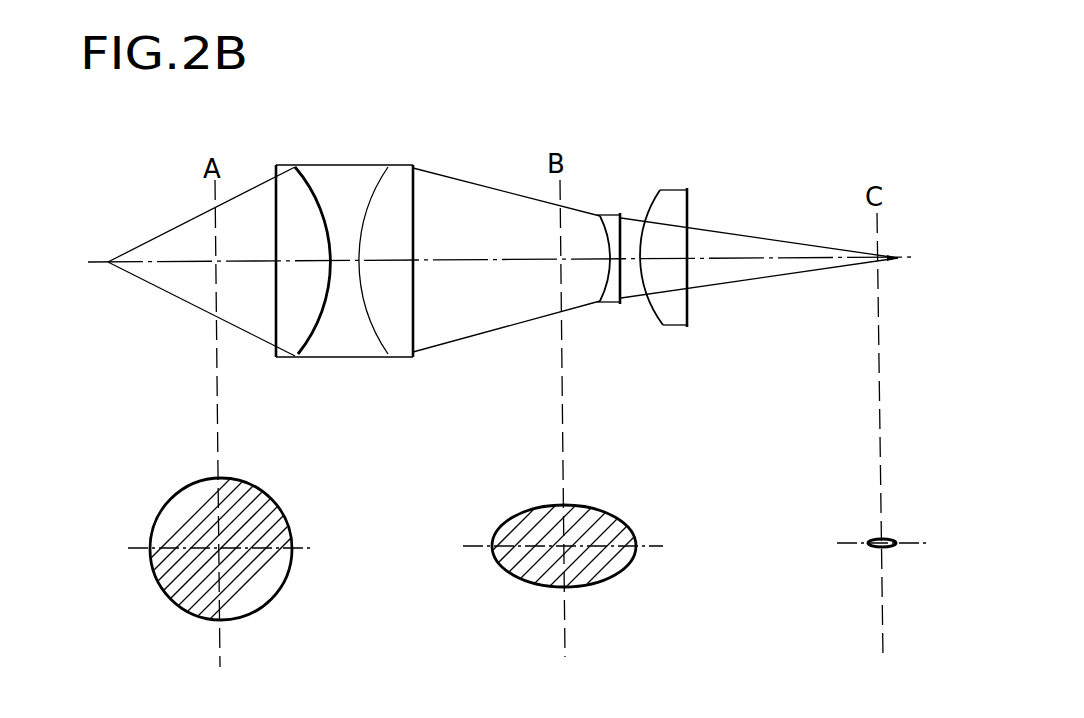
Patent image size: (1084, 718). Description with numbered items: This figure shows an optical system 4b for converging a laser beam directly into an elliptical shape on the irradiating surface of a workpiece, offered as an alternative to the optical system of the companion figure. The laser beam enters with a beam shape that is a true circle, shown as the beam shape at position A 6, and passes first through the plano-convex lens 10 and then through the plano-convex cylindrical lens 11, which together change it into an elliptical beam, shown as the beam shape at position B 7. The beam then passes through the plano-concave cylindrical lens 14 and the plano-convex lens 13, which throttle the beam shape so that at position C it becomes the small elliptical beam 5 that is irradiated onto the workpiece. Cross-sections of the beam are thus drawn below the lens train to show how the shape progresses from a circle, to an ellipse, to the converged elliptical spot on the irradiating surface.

The optical system 4b is at (655, 158).
The beam 5 is at (870, 537).
The beam shape at position A 6 is at (280, 508).
The beam shape at position B 7 is at (607, 512).
The plano-convex lens 10 is at (286, 165).
The plano-convex cylindrical lens 11 is at (392, 165).
The plano-convex lens 13 is at (687, 190).
The plano-concave cylindrical lens 14 is at (608, 213).